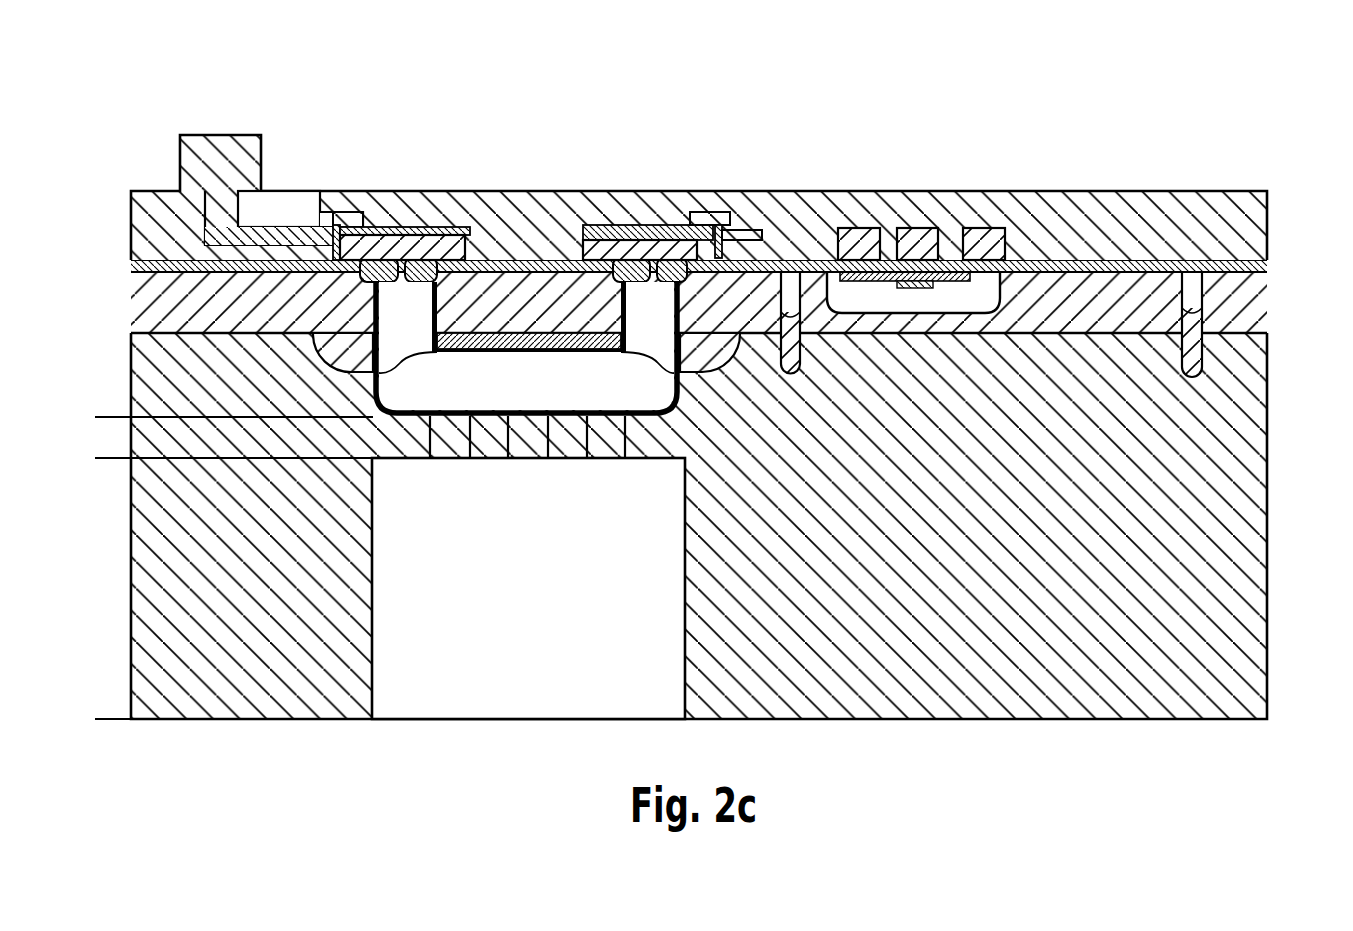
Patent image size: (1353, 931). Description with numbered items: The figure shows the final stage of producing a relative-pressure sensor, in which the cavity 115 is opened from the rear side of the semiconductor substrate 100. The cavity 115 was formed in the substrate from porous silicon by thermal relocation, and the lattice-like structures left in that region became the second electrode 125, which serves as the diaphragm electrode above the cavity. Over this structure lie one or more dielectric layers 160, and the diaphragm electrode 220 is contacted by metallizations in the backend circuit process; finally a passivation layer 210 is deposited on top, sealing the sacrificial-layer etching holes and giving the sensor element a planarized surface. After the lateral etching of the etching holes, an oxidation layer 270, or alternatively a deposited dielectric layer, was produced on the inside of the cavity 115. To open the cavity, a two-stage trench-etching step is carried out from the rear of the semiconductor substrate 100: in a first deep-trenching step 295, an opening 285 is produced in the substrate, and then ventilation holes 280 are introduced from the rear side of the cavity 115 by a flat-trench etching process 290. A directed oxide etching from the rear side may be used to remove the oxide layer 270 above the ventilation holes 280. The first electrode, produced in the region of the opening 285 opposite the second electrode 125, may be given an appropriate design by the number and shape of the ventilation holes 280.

The semiconductor substrate 100 is at (1250, 412).
The cavity 115 is at (444, 385).
The second electrode 125 is at (538, 338).
The dielectric layer 160 is at (1272, 264).
The passivation layer 210 is at (1255, 215).
The diaphragm electrode 220 is at (483, 303).
The oxidation layer 270 is at (583, 350).
The ventilation holes 280 is at (458, 440).
The opening 285 is at (557, 661).
The flat-trench etching process 290 is at (97, 417).
The first deep-trenching step 295 is at (97, 458).